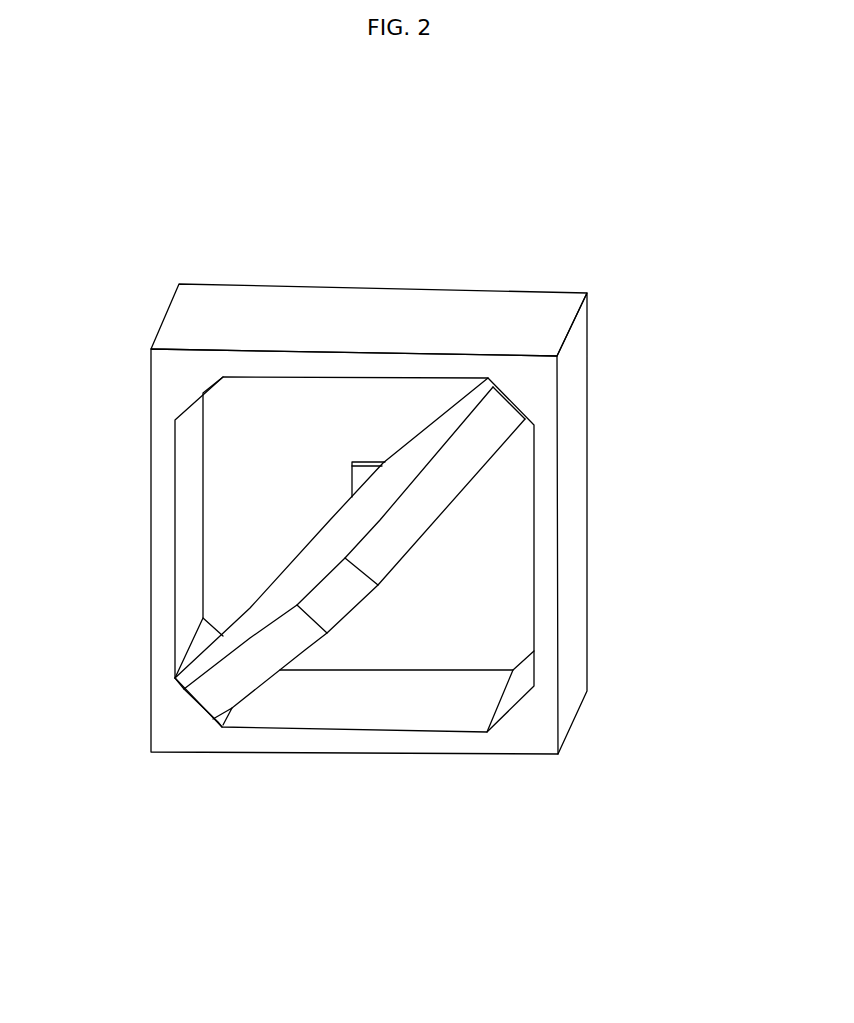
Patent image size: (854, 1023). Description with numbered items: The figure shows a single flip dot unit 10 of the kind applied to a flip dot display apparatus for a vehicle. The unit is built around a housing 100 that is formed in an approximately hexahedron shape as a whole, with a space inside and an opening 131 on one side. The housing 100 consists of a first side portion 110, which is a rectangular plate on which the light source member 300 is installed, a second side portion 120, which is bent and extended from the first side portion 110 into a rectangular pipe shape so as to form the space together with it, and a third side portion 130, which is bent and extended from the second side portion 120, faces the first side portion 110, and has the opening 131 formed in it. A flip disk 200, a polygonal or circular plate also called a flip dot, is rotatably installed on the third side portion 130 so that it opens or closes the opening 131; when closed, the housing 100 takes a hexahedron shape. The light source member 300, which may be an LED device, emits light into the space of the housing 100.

The flip dot unit 10 is at (604, 259).
The housing 100 is at (576, 507).
The first side portion 110 is at (265, 415).
The second side portion 120 is at (582, 422).
The third side portion 130 is at (172, 379).
The opening 131 is at (487, 603).
The flip disk 200 is at (253, 662).
The light source member 300 is at (357, 472).